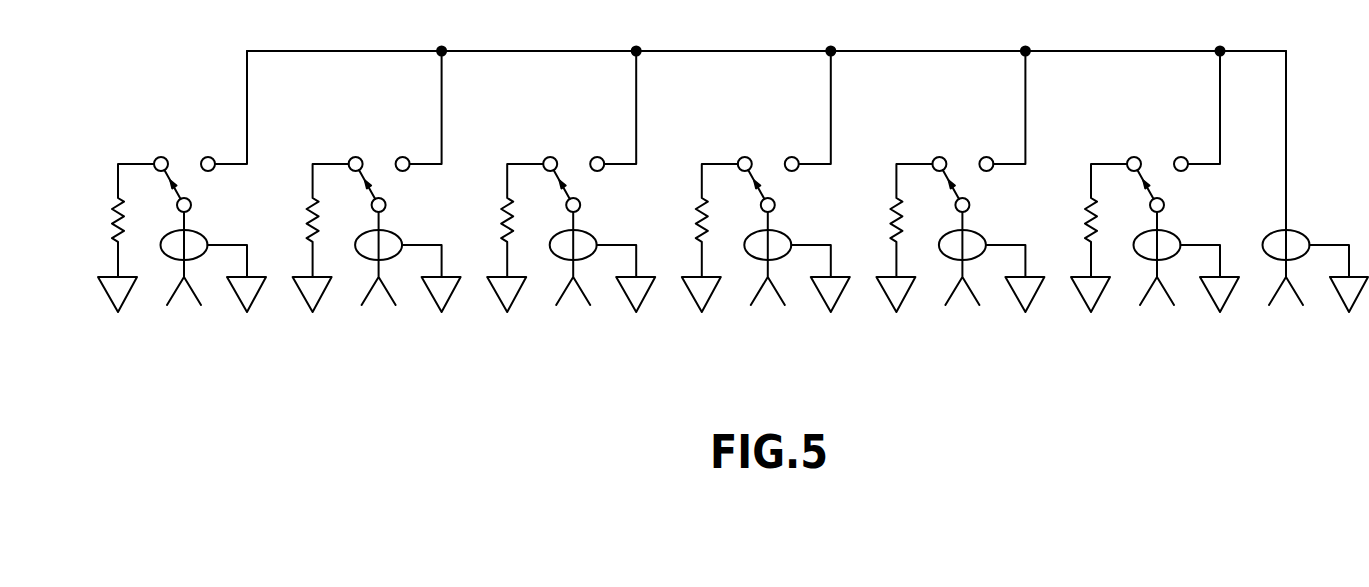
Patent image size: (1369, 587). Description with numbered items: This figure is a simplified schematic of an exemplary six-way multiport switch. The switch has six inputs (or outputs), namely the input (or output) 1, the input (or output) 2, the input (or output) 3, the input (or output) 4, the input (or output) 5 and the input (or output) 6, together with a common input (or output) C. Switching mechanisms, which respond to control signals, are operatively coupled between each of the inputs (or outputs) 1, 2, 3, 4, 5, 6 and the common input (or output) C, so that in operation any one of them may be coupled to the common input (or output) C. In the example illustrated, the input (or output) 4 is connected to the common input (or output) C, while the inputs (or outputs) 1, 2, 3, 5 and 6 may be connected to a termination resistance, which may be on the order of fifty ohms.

The input (or output) 6 is at (182, 194).
The input (or output) 5 is at (377, 194).
The input (or output) 4 is at (571, 194).
The input (or output) 3 is at (766, 194).
The input (or output) 2 is at (960, 194).
The input (or output) 1 is at (1155, 194).
The common input (or output) C is at (1316, 194).